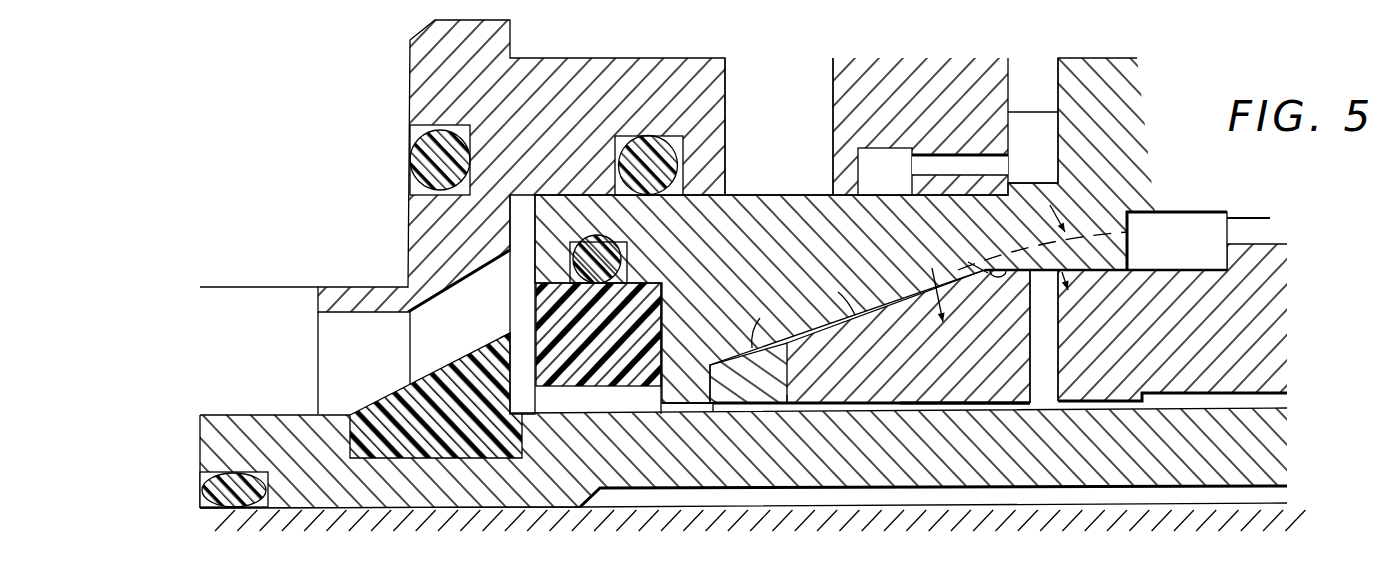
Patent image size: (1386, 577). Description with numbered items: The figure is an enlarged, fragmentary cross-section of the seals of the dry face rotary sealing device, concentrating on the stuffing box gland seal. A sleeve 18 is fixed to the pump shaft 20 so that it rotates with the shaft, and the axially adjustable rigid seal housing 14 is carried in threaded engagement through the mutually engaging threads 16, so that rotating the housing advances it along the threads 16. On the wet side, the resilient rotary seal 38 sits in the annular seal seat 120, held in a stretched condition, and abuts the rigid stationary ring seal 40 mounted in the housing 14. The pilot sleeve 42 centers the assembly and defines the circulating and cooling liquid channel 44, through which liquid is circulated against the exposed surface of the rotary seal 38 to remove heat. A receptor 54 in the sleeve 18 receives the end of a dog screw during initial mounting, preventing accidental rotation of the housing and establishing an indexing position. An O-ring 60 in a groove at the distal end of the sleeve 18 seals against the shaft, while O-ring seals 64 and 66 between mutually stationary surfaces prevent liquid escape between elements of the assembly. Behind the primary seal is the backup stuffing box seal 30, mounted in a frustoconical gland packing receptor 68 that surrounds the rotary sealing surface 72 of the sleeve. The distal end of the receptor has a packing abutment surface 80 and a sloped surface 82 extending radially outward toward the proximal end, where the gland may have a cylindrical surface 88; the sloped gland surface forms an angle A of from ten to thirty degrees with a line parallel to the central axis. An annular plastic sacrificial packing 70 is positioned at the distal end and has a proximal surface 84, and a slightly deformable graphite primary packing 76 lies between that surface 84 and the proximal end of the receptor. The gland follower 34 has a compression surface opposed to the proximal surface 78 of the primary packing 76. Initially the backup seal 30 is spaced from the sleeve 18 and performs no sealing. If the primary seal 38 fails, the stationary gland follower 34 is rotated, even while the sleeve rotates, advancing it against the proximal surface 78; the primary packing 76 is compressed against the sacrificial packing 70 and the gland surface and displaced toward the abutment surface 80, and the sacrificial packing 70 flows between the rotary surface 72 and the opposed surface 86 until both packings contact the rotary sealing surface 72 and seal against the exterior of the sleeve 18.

The seal housing 14 is at (780, 213).
The threads 16 is at (968, 150).
The sleeve 18 is at (350, 513).
The pump shaft 20 is at (622, 503).
The backup seal 30 is at (907, 282).
The gland follower 34 is at (1097, 395).
The rotary resilient seal 38 is at (420, 450).
The stationary ring seal 40 is at (662, 327).
The pilot sleeve 42 is at (318, 302).
The circulating and cooling liquid channel 44 is at (336, 358).
The receptor 54 is at (920, 126).
The sealing O-ring 60 is at (262, 492).
The O-ring seal 64 is at (410, 162).
The O-ring seal 66 is at (616, 162).
The gland packing receptor 68 is at (924, 278).
The sacrificial packing 70 is at (762, 310).
The rotary sealing surface 72 is at (884, 402).
The primary packing 76 is at (940, 398).
The proximal surface 78 is at (1032, 330).
The packing abutment surface 80 is at (714, 408).
The sloped surface 82 is at (829, 286).
The proximal surface 84 is at (795, 385).
The opposed surface 86 is at (672, 415).
The cylindrical surface 88 is at (971, 254).
The seal seat 120 is at (497, 455).
The angle A is at (1068, 253).